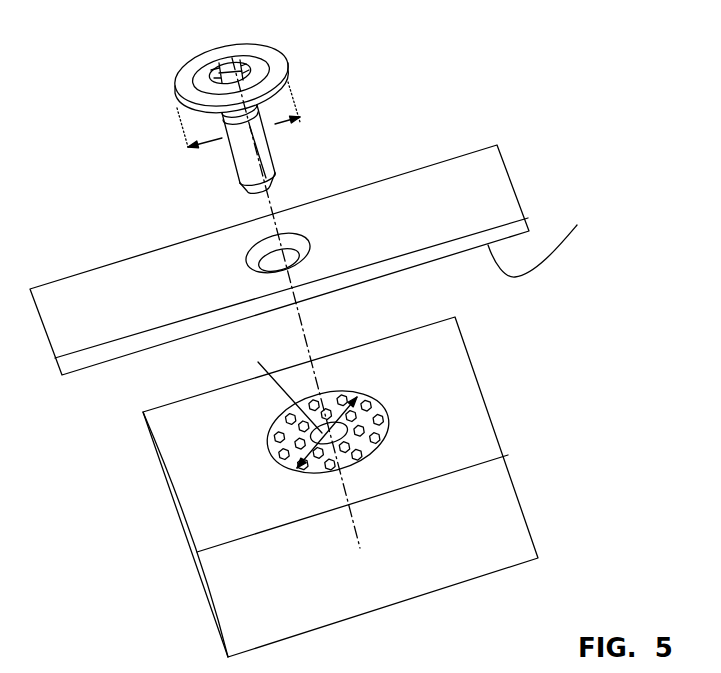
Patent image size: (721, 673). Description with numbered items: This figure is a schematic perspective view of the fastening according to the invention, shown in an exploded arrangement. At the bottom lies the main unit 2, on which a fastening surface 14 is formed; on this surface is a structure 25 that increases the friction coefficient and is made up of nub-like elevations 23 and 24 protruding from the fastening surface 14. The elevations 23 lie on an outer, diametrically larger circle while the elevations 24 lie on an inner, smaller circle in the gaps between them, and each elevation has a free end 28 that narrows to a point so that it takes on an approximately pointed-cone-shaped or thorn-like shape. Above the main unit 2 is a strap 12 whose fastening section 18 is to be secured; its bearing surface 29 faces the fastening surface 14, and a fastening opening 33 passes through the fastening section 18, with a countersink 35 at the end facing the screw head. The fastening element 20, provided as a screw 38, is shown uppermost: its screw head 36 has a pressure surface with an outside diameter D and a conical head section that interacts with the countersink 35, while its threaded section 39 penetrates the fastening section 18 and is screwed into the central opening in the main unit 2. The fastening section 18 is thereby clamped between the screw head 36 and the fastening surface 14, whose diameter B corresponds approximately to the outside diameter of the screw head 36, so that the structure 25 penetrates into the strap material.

The main unit 2 is at (324, 478).
The strap 12 is at (311, 239).
The fastening surface 14 is at (398, 445).
The fastening section 18 is at (432, 195).
The fastening element 20 is at (244, 100).
The elevations 23 is at (287, 448).
The elevations 24 is at (297, 428).
The structure 25 is at (387, 400).
The free end 28 is at (357, 397).
The bearing surface 29 is at (540, 239).
The fastening opening 33 is at (273, 262).
The countersink 35 is at (263, 248).
The screw head 36 is at (278, 58).
The screw 38 is at (165, 121).
The threaded section 39 is at (260, 157).